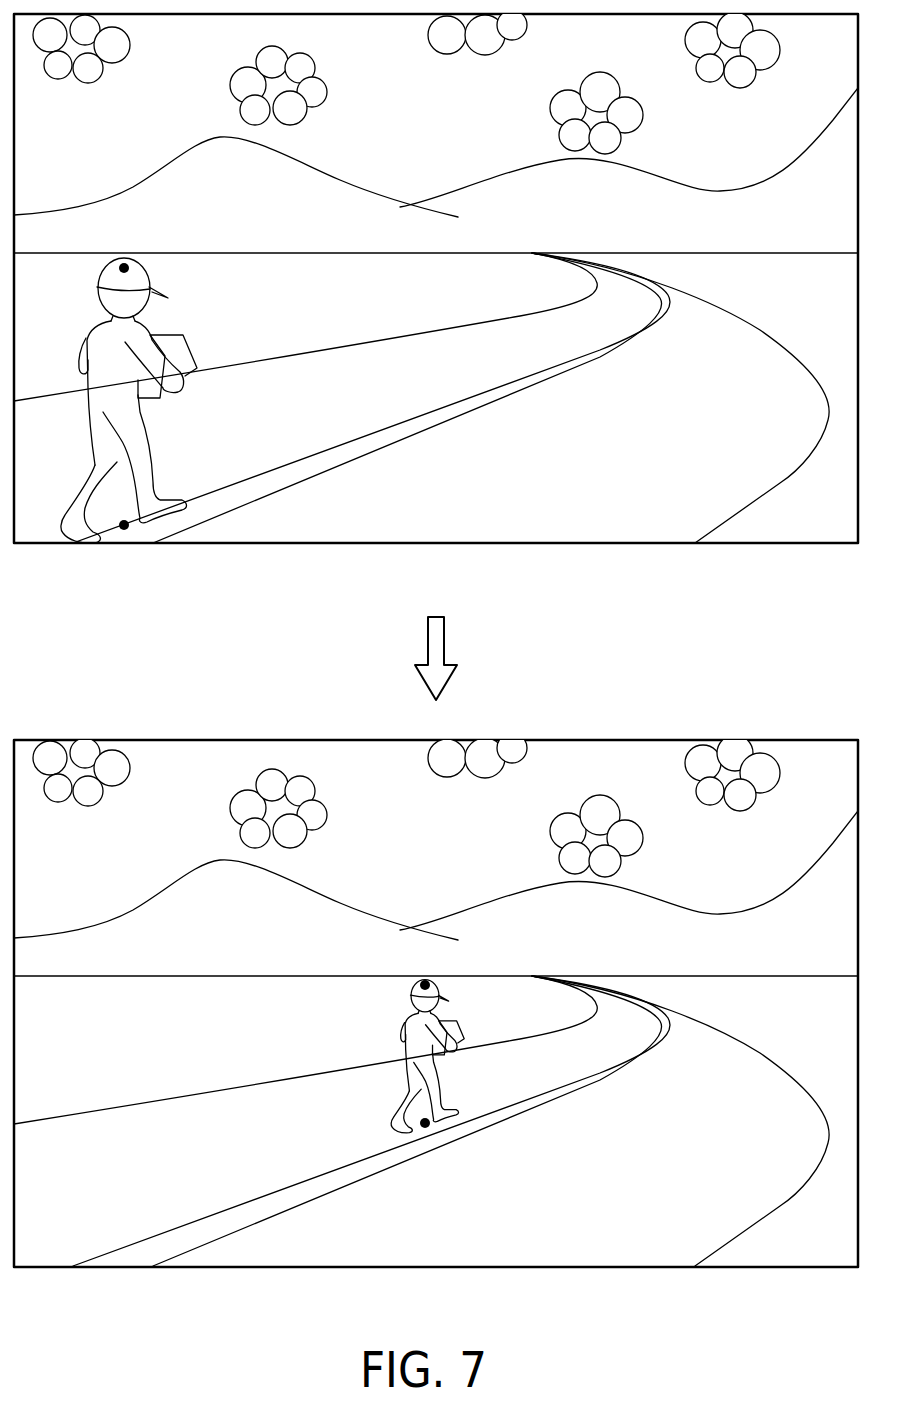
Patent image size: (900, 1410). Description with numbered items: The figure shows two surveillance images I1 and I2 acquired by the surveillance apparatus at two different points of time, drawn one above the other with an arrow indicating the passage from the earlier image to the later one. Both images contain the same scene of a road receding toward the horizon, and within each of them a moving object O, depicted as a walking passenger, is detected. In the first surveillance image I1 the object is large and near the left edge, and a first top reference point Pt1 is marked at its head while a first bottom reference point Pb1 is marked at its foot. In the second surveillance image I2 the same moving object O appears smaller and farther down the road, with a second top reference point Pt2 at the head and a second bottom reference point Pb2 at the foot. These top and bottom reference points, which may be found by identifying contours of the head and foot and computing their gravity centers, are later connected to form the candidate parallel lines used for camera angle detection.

The surveillance image I1 is at (436, 299).
The surveillance image I2 is at (436, 1027).
The moving object o is at (143, 283).
The first top reference point Pt1 is at (125, 264).
The first bottom reference point Pb1 is at (124, 530).
The second top reference point Pt2 is at (425, 980).
The second bottom reference point Pb2 is at (425, 1128).